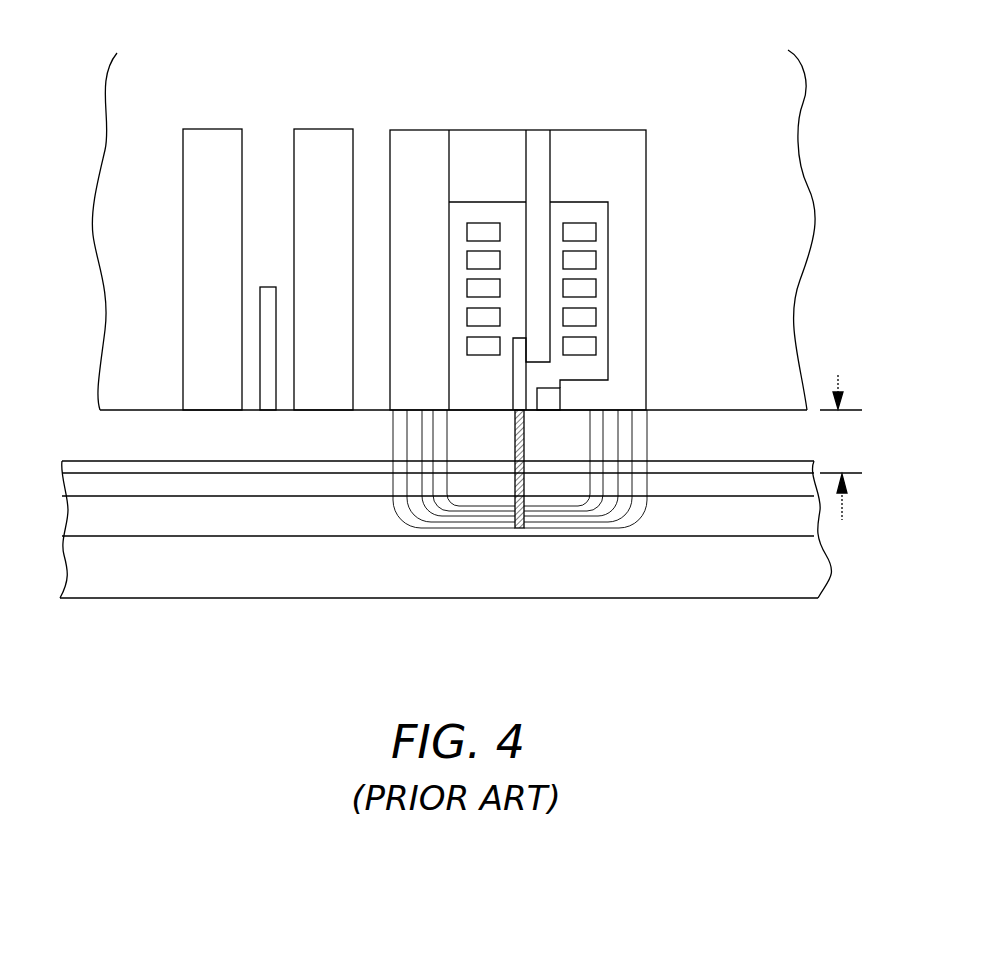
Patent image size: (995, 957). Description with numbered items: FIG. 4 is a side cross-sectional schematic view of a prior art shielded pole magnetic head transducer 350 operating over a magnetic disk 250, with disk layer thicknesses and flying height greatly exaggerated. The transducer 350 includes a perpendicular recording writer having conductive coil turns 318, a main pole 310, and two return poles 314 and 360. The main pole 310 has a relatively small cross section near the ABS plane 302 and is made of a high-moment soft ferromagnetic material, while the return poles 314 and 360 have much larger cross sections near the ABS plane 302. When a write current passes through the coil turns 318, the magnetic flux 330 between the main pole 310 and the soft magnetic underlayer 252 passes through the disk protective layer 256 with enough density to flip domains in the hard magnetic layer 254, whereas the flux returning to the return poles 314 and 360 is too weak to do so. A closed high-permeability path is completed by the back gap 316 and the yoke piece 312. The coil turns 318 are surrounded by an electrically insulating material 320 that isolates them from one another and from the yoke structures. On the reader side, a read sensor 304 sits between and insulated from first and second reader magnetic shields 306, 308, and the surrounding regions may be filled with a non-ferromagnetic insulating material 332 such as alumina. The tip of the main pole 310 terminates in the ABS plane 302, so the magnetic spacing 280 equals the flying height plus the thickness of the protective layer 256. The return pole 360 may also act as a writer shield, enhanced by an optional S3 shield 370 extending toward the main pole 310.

The shielded pole magnetic head transducer 350 is at (356, 76).
The non-ferromagnetic and electrically insulating material 332 is at (126, 296).
The second reader magnetic shield 308 is at (196, 296).
The first reader magnetic shield 306 is at (306, 296).
The read sensor 304 is at (268, 392).
The ABS plane 302 is at (118, 411).
The return pole 314 is at (401, 296).
The back gap 316 is at (470, 174).
The yoke piece 312 is at (537, 148).
The conductive coil turns 318 is at (487, 260).
The electrically insulating material 320 is at (465, 391).
The second return pole 360 is at (593, 406).
The S3 shield 370 is at (548, 393).
The main pole 310 is at (518, 385).
The magnetic flux 330 is at (522, 448).
The disk protective layer 256 is at (104, 464).
The hard magnetic layer 254 is at (133, 494).
The soft magnetic underlayer 252 is at (133, 528).
The magnetic disk 250 is at (133, 570).
The magnetic spacing 280 is at (841, 429).